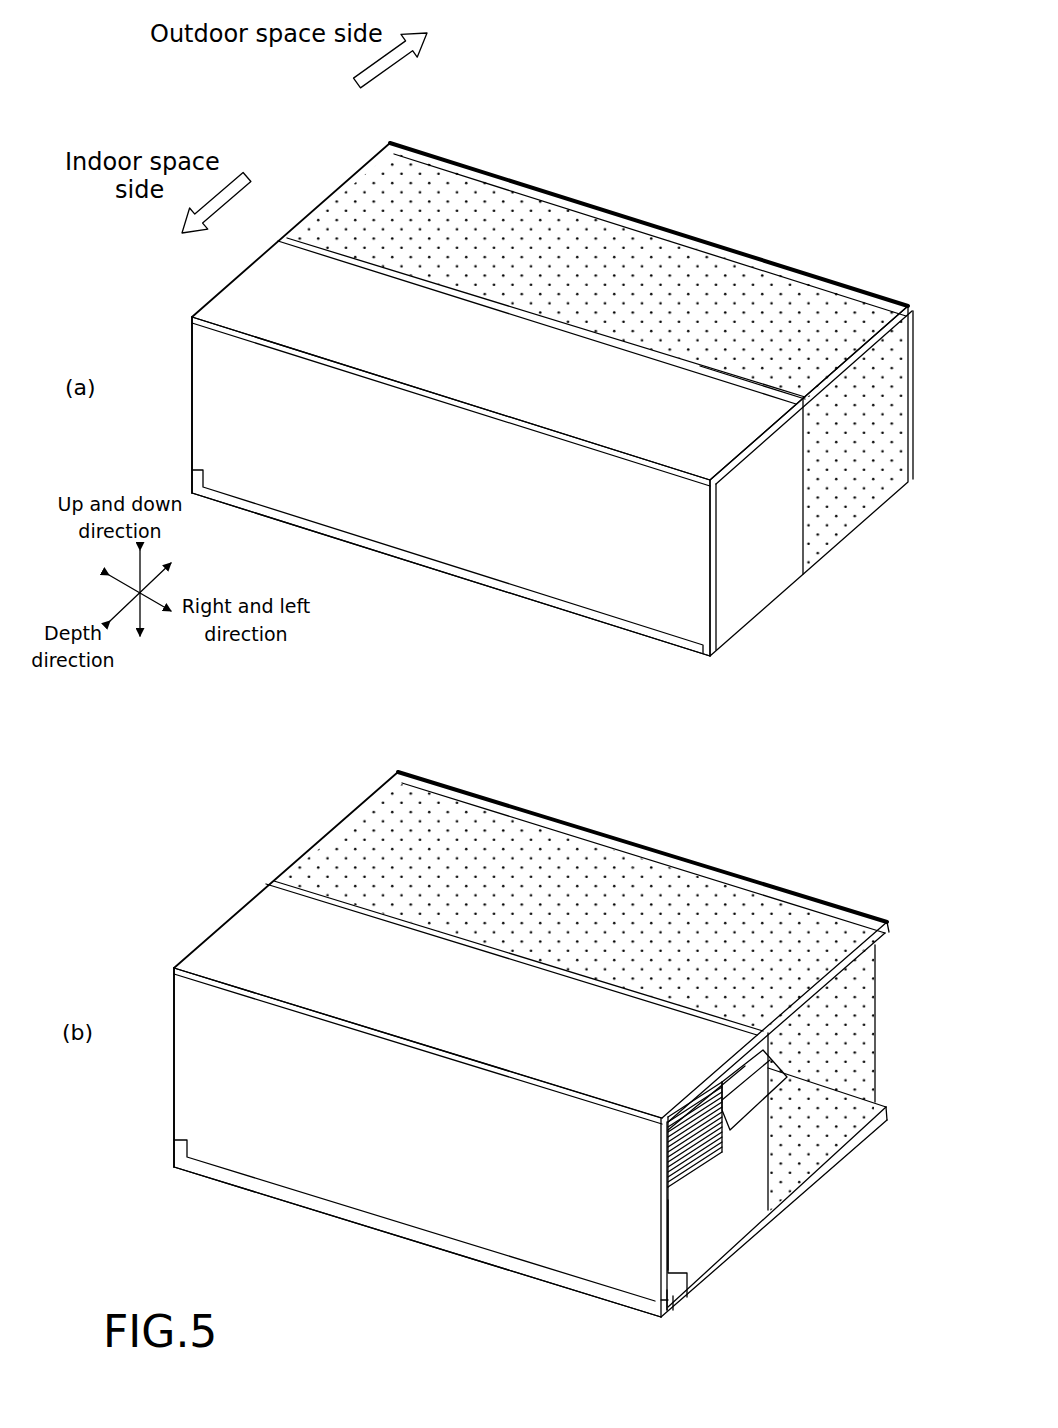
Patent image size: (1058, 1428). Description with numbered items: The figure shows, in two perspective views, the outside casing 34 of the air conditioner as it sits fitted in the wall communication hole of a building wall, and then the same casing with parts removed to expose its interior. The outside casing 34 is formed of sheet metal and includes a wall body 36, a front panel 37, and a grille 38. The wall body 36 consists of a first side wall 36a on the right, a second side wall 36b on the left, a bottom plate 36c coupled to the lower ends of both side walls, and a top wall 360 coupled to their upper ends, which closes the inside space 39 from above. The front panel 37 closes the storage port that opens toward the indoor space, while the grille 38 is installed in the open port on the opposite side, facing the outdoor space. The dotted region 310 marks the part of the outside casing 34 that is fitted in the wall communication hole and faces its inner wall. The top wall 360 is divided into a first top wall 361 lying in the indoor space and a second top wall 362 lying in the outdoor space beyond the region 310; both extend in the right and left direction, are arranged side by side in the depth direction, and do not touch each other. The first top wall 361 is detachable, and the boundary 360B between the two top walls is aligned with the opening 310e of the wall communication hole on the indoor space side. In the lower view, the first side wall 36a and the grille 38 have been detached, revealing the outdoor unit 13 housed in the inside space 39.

The outdoor unit 13 is at (718, 1138).
The outside casing 34 is at (766, 183).
The wall body 36 is at (234, 279).
The first side wall 36a is at (783, 550).
The second side wall 36b is at (192, 403).
The bottom plate 36c is at (440, 574).
The front panel 37 is at (363, 480).
The grille 38 is at (631, 210).
The inside space 39 is at (708, 1200).
The region 310 is at (753, 307).
The opening 310e is at (742, 378).
The top wall 360 is at (610, 73).
The boundary 360B is at (631, 350).
The first top wall 361 is at (375, 317).
The second top wall 362 is at (497, 237).